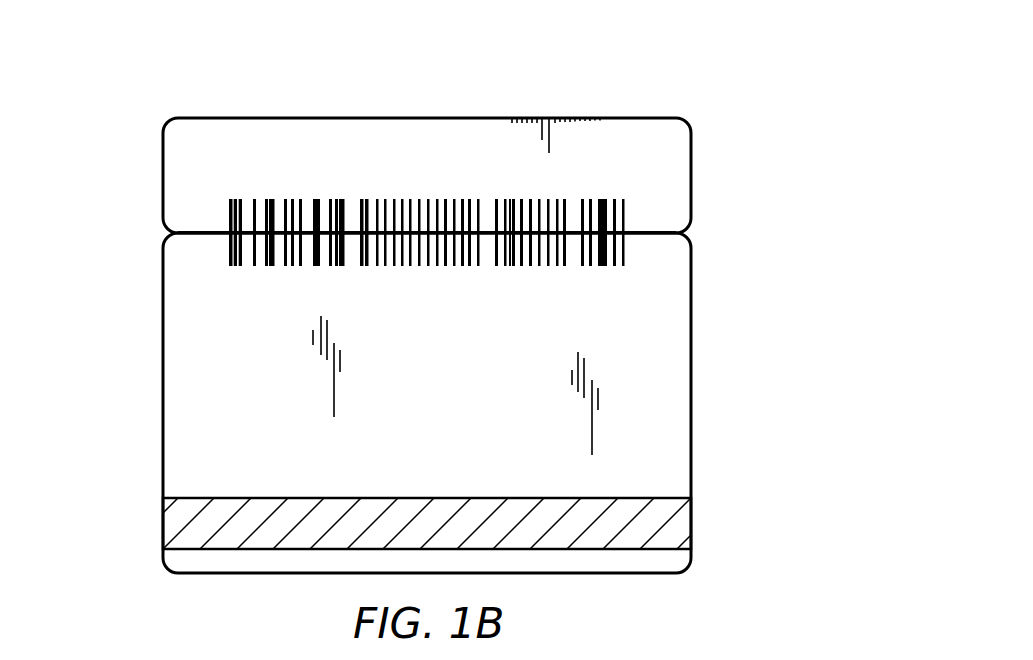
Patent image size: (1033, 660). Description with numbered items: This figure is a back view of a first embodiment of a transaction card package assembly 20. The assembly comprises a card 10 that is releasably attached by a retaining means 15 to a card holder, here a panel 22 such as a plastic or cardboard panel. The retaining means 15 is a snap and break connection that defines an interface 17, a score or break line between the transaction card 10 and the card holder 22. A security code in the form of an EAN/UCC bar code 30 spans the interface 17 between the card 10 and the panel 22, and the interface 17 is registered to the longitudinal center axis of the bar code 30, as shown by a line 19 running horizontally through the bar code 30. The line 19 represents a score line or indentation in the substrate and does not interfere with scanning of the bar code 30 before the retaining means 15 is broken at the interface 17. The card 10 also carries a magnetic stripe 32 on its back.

The transaction card package assembly 20 is at (156, 56).
The interface 17 is at (647, 229).
The card 10 is at (691, 398).
The panel 22 is at (497, 140).
The retaining means 15 is at (203, 233).
The line 19 is at (413, 230).
The bar code 30 is at (495, 263).
The magnetic stripe 32 is at (691, 530).